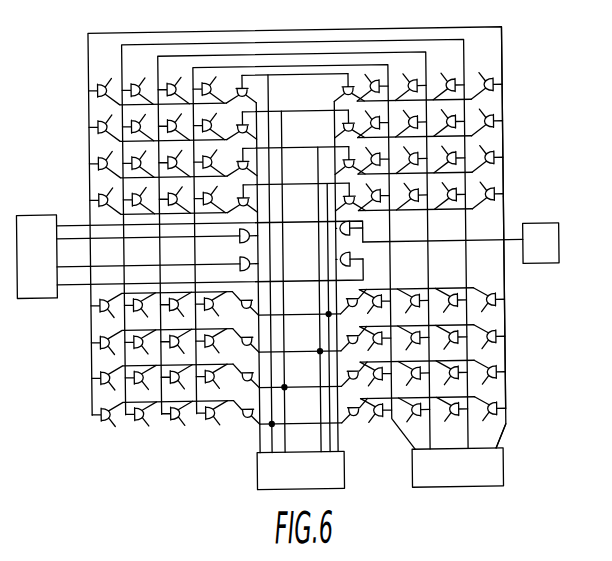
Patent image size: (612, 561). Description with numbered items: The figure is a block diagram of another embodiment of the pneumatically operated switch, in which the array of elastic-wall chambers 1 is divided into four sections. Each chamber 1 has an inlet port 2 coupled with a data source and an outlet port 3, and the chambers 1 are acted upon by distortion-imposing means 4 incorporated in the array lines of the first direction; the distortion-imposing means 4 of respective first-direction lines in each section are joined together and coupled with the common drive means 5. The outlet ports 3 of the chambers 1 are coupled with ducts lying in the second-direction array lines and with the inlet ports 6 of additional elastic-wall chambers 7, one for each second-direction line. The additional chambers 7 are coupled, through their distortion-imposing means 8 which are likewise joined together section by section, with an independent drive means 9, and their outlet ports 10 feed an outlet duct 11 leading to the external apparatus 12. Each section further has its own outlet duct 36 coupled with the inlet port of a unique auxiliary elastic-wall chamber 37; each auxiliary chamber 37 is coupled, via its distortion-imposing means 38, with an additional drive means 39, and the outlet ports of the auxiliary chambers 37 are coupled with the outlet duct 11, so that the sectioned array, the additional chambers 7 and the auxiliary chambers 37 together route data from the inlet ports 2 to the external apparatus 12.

The chamber 1 is at (100, 80).
The inlet port 2 is at (498, 168).
The outlet port 3 is at (493, 210).
The distortion-imposing means 4 is at (124, 175).
The drive means 5 is at (457, 467).
The inlet port of additional chamber 6 is at (242, 402).
The additional elastic-wall chamber 7 is at (240, 87).
The distortion-imposing means of additional chamber 8 is at (270, 82).
The independent drive means 9 is at (300, 470).
The outlet port of additional chamber 10 is at (347, 408).
The outlet duct 11 is at (451, 236).
The external apparatus 12 is at (541, 243).
The section outlet duct 36 is at (274, 213).
The auxiliary elastic-wall chamber 37 is at (242, 243).
The distortion-imposing means of auxiliary chamber 38 is at (183, 279).
The additional drive means 39 is at (36, 257).